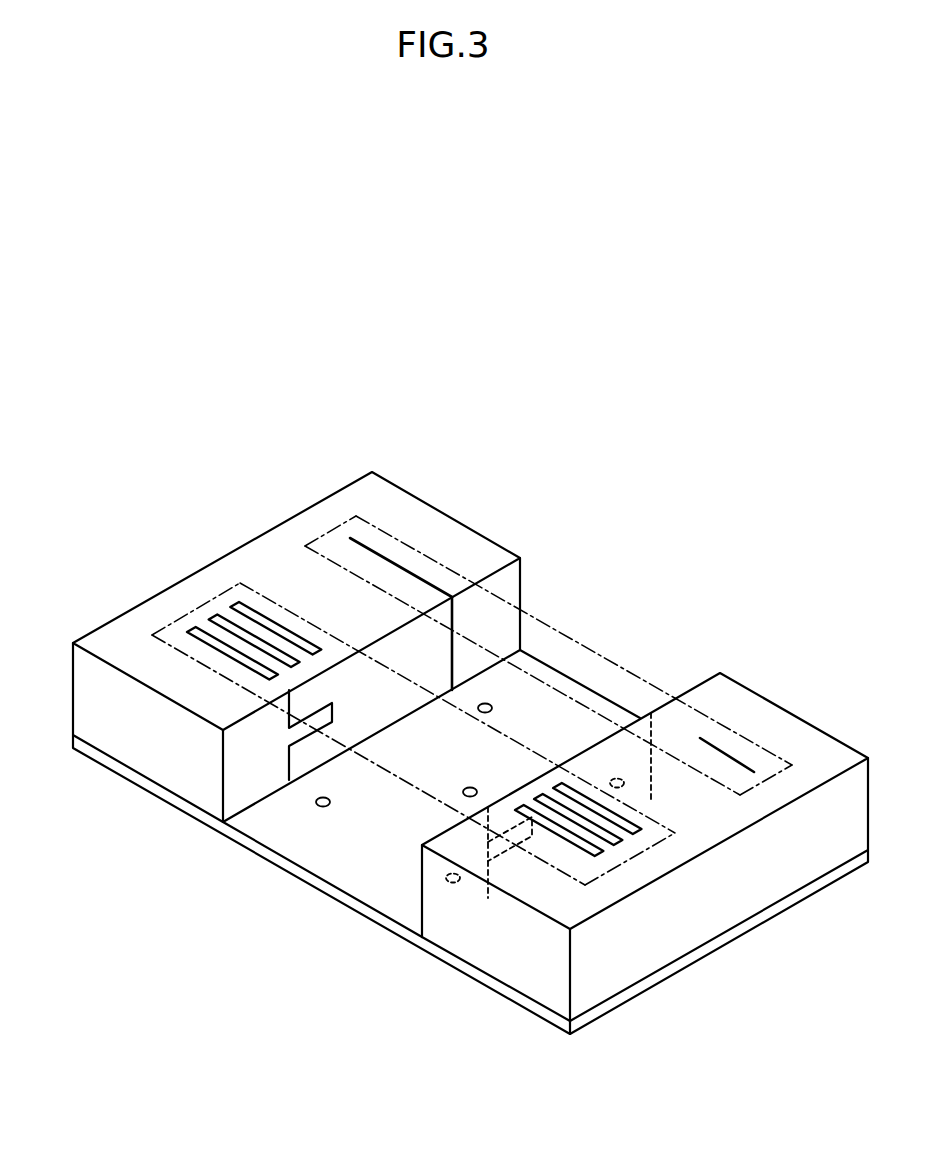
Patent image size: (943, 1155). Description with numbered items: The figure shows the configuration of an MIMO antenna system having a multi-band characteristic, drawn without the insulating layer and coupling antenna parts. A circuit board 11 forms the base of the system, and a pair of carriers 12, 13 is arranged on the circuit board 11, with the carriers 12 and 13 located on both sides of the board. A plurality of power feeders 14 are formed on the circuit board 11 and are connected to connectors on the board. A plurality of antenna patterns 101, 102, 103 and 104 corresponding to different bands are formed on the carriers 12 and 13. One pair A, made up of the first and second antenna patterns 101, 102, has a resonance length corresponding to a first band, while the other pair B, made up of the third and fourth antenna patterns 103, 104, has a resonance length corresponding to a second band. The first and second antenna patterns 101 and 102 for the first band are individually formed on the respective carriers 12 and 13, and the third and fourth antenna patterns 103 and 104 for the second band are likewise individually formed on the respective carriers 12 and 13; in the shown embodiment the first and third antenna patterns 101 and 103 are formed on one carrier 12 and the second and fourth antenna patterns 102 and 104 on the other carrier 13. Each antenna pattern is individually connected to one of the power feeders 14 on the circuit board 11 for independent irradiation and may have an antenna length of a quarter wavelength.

The circuit board 11 is at (140, 784).
The carrier 12 is at (73, 684).
The carrier 13 is at (603, 978).
The power feeder 14 is at (612, 778).
The first antenna pattern 101 is at (390, 558).
The second antenna pattern 102 is at (700, 738).
The third antenna pattern 103 is at (290, 695).
The fourth antenna pattern 104 is at (605, 852).
The pair of antenna patterns A is at (448, 567).
The pair of antenna patterns B is at (175, 620).